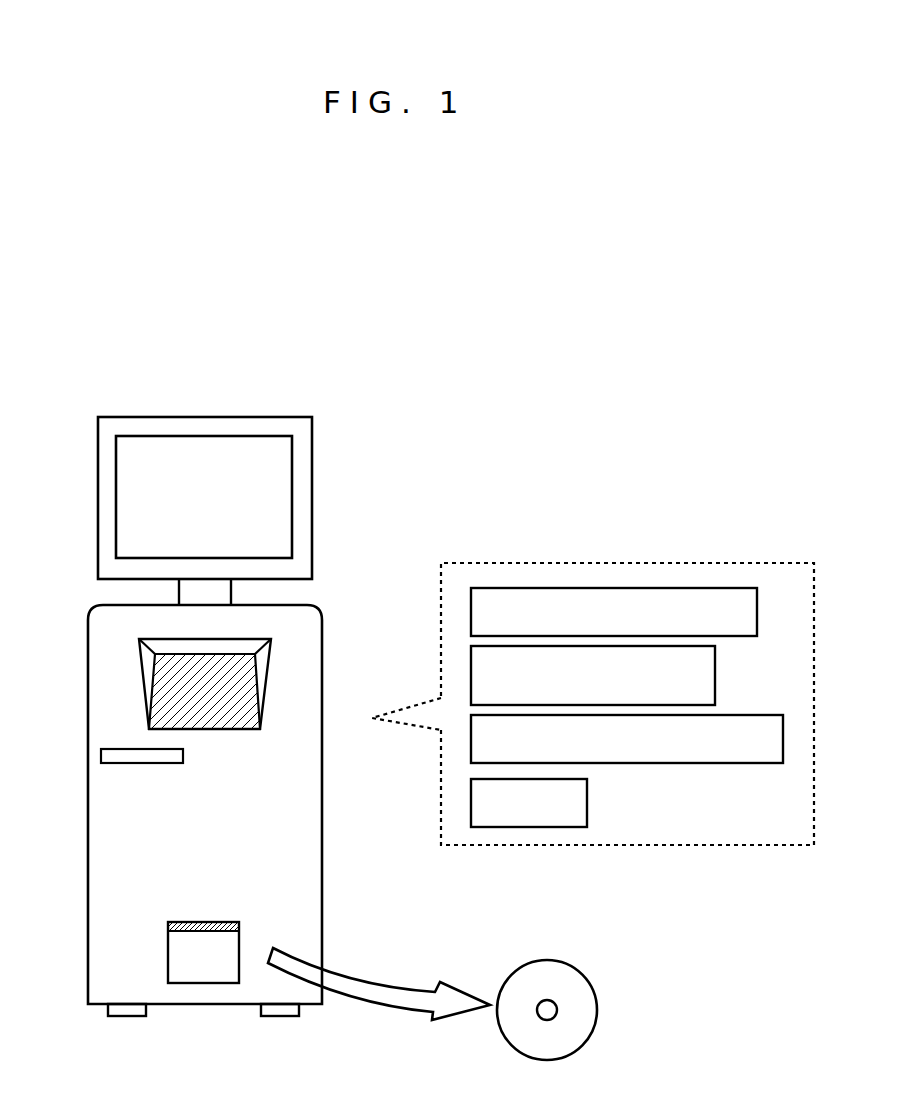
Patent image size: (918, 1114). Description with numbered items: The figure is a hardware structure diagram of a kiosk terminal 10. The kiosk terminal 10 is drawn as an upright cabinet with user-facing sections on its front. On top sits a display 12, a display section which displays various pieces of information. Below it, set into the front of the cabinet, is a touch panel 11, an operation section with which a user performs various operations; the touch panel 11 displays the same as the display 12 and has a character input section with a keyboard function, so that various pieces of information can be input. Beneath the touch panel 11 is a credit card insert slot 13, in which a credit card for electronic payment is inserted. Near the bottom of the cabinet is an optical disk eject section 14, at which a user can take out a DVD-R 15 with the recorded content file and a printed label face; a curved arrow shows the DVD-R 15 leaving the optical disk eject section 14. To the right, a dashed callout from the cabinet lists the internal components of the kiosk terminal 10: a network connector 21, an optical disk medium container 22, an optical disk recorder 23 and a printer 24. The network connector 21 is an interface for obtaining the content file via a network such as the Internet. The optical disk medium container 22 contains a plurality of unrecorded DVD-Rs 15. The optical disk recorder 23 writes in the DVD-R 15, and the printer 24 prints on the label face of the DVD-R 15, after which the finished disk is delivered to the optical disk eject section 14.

The kiosk terminal 10 is at (390, 481).
The touch panel 11 is at (167, 695).
The display 12 is at (133, 480).
The credit card insert slot 13 is at (118, 756).
The optical disk eject section 14 is at (197, 956).
The DVD-R 15 is at (580, 1048).
The network connector 21 is at (757, 611).
The optical disk medium container 22 is at (715, 676).
The optical disk recorder 23 is at (783, 737).
The printer 24 is at (587, 803).